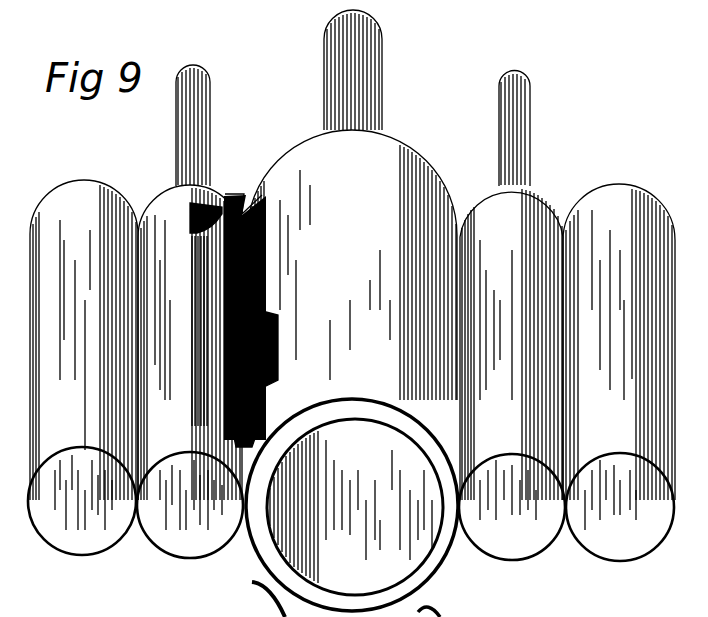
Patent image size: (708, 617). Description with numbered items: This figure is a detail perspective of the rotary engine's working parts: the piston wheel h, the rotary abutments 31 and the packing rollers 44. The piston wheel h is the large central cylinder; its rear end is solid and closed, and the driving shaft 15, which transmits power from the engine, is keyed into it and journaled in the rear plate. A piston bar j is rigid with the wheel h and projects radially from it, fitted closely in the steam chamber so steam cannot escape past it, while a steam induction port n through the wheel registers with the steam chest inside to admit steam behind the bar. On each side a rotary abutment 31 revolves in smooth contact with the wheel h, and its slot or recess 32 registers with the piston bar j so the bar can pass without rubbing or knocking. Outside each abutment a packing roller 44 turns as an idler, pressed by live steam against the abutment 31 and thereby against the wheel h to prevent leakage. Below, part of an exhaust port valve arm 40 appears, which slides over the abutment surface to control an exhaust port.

The driving shaft 15 is at (383, 78).
The rotary abutment 31 is at (192, 397).
The slot or recess 32 is at (192, 288).
The packing roller 44 is at (351, 370).
The exhaust port valve arm 40 is at (311, 599).
The piston wheel h is at (352, 370).
The piston bar j is at (250, 267).
The steam induction port n is at (282, 344).